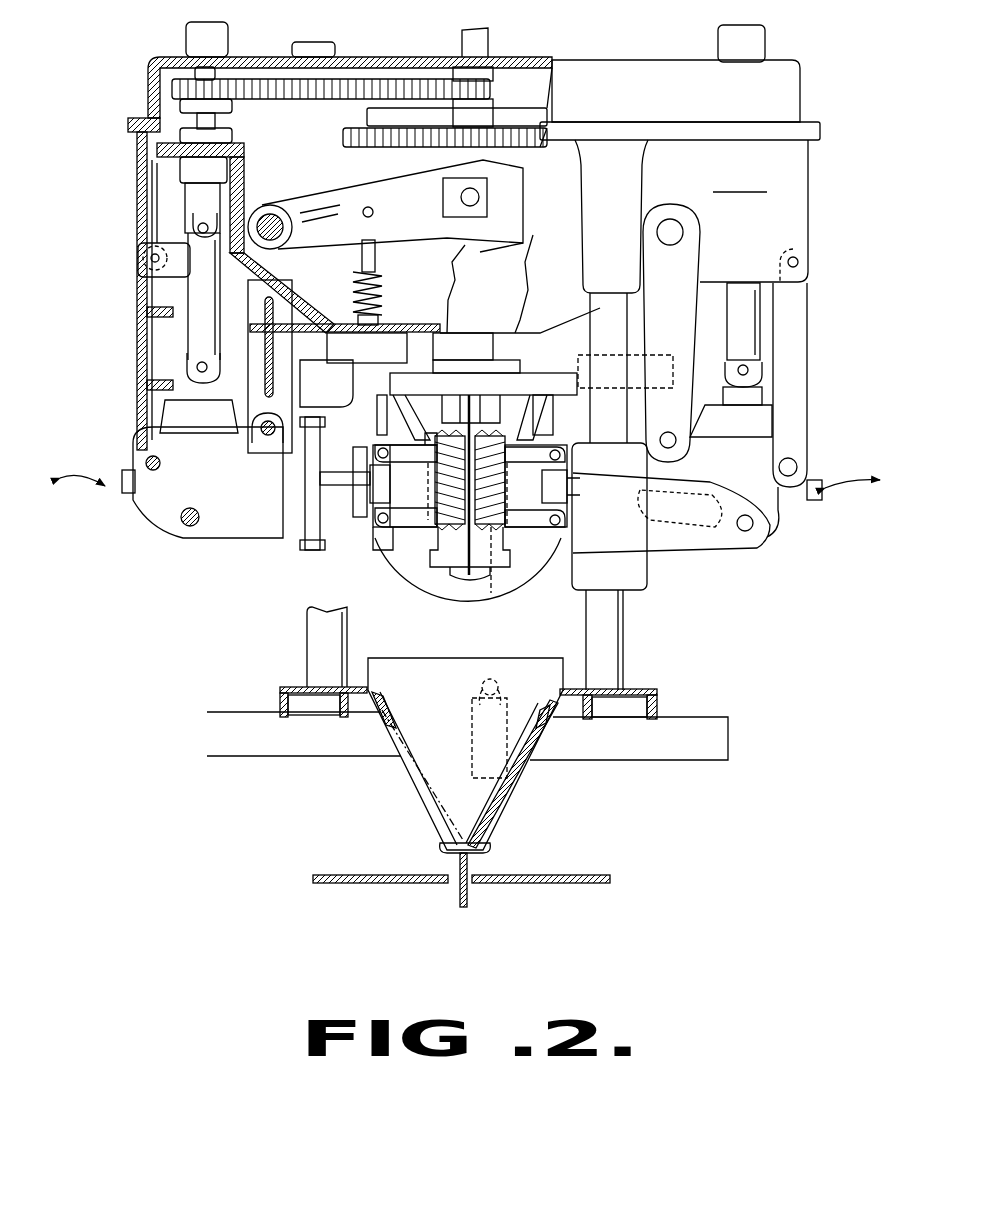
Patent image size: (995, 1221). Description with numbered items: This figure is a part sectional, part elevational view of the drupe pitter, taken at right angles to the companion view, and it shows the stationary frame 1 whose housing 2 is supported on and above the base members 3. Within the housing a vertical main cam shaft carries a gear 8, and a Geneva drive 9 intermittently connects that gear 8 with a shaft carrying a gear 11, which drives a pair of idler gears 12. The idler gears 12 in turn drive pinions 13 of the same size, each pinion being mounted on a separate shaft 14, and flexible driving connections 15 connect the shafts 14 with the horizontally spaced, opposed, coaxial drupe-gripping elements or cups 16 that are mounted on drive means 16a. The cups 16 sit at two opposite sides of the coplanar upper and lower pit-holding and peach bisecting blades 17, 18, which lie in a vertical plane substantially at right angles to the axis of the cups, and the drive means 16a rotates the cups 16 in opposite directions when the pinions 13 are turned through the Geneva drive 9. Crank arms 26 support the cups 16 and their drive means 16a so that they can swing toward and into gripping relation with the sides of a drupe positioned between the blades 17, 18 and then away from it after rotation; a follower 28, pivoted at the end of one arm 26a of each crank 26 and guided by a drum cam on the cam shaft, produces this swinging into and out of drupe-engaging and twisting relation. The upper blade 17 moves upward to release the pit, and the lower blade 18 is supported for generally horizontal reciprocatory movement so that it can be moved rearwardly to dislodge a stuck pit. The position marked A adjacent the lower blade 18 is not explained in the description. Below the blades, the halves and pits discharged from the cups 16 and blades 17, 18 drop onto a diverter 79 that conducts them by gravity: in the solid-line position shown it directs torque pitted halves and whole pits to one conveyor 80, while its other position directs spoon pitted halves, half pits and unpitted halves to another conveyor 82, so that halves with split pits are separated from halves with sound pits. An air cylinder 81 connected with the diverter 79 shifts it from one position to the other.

The stationary frame 1 is at (625, 632).
The housing 2 is at (812, 184).
The base members 3 is at (700, 717).
The gear 8 is at (520, 140).
The Geneva drive 9 is at (540, 117).
The gear 11 is at (502, 82).
The idler gears 12 is at (373, 82).
The pinions 13 is at (172, 88).
The shaft 14 is at (216, 73).
The flexible driving connections 15 is at (185, 320).
The drupe-gripping elements or cups 16 is at (408, 530).
The drive means 16a is at (188, 535).
The upper pit-holding and peach bisecting blade 17 is at (487, 345).
The lower pit-holding and peach bisecting blade 18 is at (455, 565).
The crank arms 26 is at (697, 265).
The arm 26a is at (332, 240).
The follower 28 is at (523, 207).
The diverter 79 is at (517, 768).
The conveyor 80 is at (374, 877).
The air cylinder 81 is at (507, 726).
The conveyor 82 is at (553, 877).
The arc of movement A is at (493, 588).